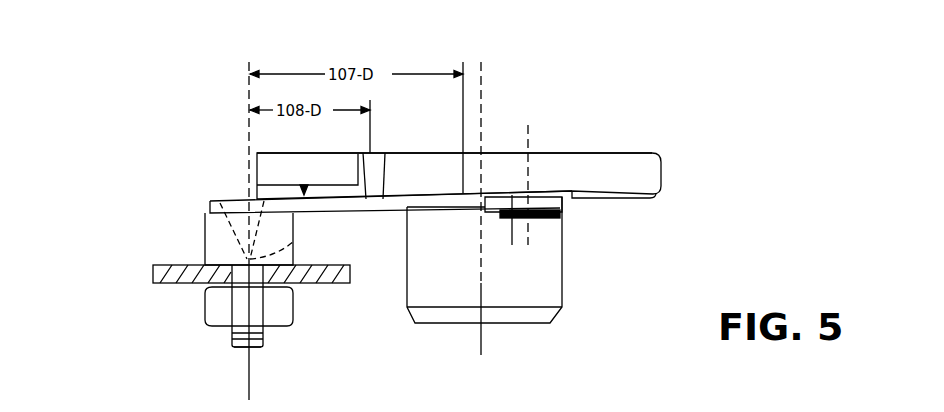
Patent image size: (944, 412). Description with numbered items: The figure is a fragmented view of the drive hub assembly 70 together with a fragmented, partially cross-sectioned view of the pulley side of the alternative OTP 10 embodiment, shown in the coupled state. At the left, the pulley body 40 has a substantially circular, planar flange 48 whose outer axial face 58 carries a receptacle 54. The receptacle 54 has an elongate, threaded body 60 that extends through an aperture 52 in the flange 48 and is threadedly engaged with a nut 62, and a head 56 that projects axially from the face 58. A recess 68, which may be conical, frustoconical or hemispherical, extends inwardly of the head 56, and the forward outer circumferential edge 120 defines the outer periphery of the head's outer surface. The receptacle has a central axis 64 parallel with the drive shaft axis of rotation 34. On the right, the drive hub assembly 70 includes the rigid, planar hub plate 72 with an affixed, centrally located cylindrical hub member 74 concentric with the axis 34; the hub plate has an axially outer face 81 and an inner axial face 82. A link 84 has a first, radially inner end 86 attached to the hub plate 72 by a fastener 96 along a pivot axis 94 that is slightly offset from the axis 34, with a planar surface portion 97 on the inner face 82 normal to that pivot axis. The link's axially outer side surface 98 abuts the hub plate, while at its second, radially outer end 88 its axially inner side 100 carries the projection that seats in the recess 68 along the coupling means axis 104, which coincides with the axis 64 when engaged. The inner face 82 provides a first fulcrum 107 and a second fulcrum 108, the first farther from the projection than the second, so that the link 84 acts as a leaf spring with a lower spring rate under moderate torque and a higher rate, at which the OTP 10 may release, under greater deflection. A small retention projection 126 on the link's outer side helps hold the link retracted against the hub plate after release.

The OTP 10 is at (115, 136).
The drive hub assembly 70 is at (663, 64).
The hub plate 72 is at (491, 170).
The axially outer face 81 is at (614, 148).
The inner axial face 82 is at (603, 202).
The retention projection 126 is at (304, 187).
The second fulcrum 108 is at (383, 152).
The first fulcrum 107 is at (460, 192).
The outer circumferential edge 120 is at (210, 210).
The second, radially outer end 88 is at (215, 208).
The axially outer side surface 98 is at (219, 185).
The receptacle 54 is at (196, 244).
The recess 68 is at (297, 243).
The head 56 is at (213, 258).
The pulley body 40 is at (197, 293).
The flange 48 is at (160, 270).
The outer axial face 58 is at (323, 259).
The central axis 64 is at (277, 333).
The coupling means axis 104 is at (250, 383).
The aperture 52 is at (233, 300).
The nut 62 is at (232, 334).
The threaded body 60 is at (237, 346).
The axially inner side 100 is at (422, 212).
The link 84 is at (372, 205).
The axis of rotation 34 is at (481, 352).
The pivot axis 94 is at (562, 258).
The fastener 96 is at (548, 148).
The planar surface portion 97 is at (511, 220).
The first, radially inner end 86 is at (566, 205).
The hub member 74 is at (548, 297).